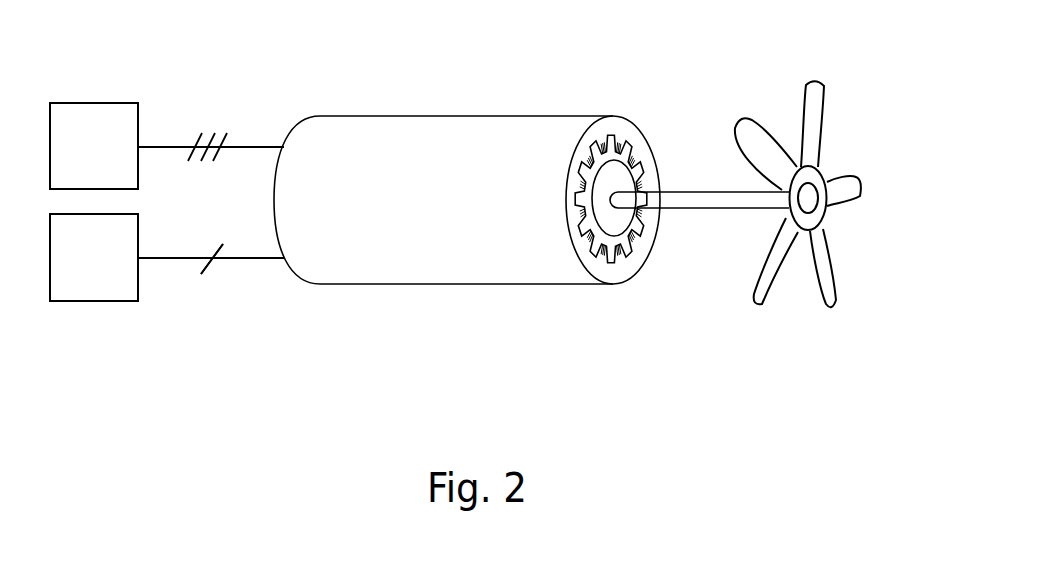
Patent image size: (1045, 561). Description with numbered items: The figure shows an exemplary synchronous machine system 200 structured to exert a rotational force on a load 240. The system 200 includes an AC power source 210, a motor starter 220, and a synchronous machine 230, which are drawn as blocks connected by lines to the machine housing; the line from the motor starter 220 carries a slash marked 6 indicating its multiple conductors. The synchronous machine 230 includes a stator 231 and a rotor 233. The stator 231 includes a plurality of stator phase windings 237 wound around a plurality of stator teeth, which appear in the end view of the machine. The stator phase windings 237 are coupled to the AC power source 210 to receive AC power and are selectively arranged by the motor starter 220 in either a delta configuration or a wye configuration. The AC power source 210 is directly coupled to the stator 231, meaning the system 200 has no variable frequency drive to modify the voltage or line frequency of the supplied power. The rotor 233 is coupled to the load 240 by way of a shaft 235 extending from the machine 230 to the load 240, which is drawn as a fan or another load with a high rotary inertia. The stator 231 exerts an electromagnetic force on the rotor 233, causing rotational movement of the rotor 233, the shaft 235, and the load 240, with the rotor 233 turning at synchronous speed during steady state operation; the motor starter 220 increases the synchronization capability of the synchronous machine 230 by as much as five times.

The synchronous machine system 200 is at (723, 50).
The AC power source 210 is at (98, 103).
The motor starter 220 is at (93, 302).
The conductor line 6 is at (212, 248).
The synchronous machine 230 is at (433, 292).
The stator 231 is at (620, 165).
The rotor 233 is at (642, 183).
The shaft 235 is at (688, 210).
The stator phase windings 237 is at (627, 140).
The load 240 is at (826, 91).